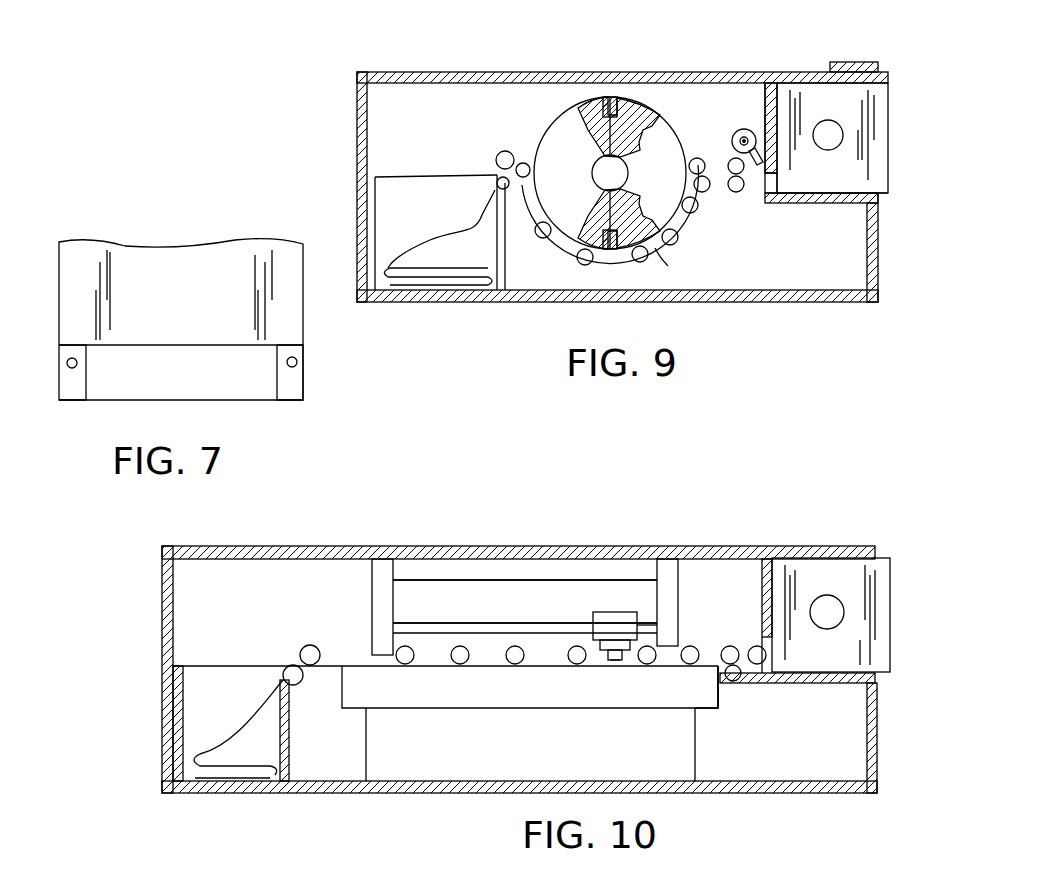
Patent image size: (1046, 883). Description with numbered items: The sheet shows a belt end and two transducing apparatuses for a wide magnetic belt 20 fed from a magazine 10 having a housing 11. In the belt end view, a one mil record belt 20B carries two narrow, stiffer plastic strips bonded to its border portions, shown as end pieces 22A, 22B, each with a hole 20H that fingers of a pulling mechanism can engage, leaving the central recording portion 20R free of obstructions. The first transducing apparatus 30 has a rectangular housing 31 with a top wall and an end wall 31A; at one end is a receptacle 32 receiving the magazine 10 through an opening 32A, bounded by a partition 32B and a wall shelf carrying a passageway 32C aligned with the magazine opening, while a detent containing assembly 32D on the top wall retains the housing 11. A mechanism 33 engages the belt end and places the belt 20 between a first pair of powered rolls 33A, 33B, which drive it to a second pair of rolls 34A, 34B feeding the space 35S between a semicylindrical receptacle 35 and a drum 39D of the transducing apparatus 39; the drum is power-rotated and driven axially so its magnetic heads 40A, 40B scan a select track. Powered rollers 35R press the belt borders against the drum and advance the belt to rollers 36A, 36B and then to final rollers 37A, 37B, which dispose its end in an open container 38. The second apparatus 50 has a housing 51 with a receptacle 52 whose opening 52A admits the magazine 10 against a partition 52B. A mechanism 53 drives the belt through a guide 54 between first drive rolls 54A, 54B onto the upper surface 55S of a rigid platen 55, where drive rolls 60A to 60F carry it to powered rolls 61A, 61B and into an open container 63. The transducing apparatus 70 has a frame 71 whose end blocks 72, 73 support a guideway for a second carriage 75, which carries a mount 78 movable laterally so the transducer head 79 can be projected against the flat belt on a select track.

In FIG. 9, the magazine 10 is at (886, 172).
In FIG. 10, the magazine 10 is at (895, 632).
In FIG. 9, the housing 11 is at (872, 125).
In FIG. 10, the housing 11 is at (878, 612).
In FIG. 7, the magnetic belt 20 is at (181, 319).
In FIG. 9, the magnetic belt 20 is at (443, 240).
In FIG. 10, the magnetic belt 20 is at (250, 745).
In FIG. 7, the record belt 20B is at (166, 243).
In FIG. 7, the central recording portion 20R is at (204, 283).
In FIG. 7, the hole 20H is at (298, 366).
In FIG. 7, the film edge portion 22A is at (72, 385).
In FIG. 7, the film edge portion 22B is at (292, 385).
In FIG. 9, the magnetic transducing apparatus 30 is at (356, 66).
In FIG. 9, the housing 31 is at (445, 72).
In FIG. 9, the housing end wall 31A is at (872, 268).
In FIG. 9, the receptacle 32 is at (828, 196).
In FIG. 9, the opening 32A is at (880, 202).
In FIG. 9, the receptacle partition 32B is at (772, 84).
In FIG. 9, the passageway 32C is at (785, 205).
In FIG. 9, the detent containing assembly 32D is at (852, 62).
In FIG. 9, the mechanism 33 is at (748, 127).
In FIG. 9, the first powered roll 33A is at (740, 160).
In FIG. 9, the first powered roll 33B is at (742, 190).
In FIG. 9, the second powered roll 34A is at (695, 160).
In FIG. 9, the second powered roll 34B is at (708, 192).
In FIG. 9, the semicylindrical receptacle 35 is at (552, 242).
In FIG. 9, the powered rollers 35R is at (690, 198).
In FIG. 9, the space 35S is at (685, 262).
In FIG. 9, the powered roller 36A is at (528, 160).
In FIG. 9, the powered roller 36B is at (477, 232).
In FIG. 9, the powered roller 37A is at (510, 152).
In FIG. 9, the powered roller 37B is at (497, 182).
In FIG. 9, the open container 38 is at (445, 210).
In FIG. 9, the magnetic transducing apparatus 39 is at (660, 105).
In FIG. 9, the drum 39D is at (578, 171).
In FIG. 9, the magnetic head 40A is at (614, 97).
In FIG. 9, the magnetic head 40B is at (597, 252).
In FIG. 10, the apparatus 50 is at (400, 546).
In FIG. 10, the housing 51 is at (525, 546).
In FIG. 10, the receptacle 52 is at (836, 548).
In FIG. 10, the opening 52A is at (878, 685).
In FIG. 10, the receptacle partition 52B is at (766, 572).
In FIG. 10, the mechanism 53 is at (752, 647).
In FIG. 10, the film guide 54 is at (727, 702).
In FIG. 10, the first drive roll 54A is at (718, 646).
In FIG. 10, the first drive roll 54B is at (740, 680).
In FIG. 10, the platen 55 is at (538, 696).
In FIG. 10, the upper surface 55S is at (450, 660).
In FIG. 10, the drive roll 60F is at (405, 664).
In FIG. 10, the drive roll 60A is at (650, 664).
In FIG. 10, the powered roll 61A is at (310, 646).
In FIG. 10, the powered roll 61B is at (300, 688).
In FIG. 10, the open container 63 is at (226, 702).
In FIG. 10, the magnetic transducing apparatus 70 is at (617, 576).
In FIG. 10, the frame 71 is at (374, 632).
In FIG. 10, the end block 72 is at (372, 600).
In FIG. 10, the end block 73 is at (665, 575).
In FIG. 10, the second carriage 75 is at (545, 580).
In FIG. 10, the mount 78 is at (597, 612).
In FIG. 10, the magnetic transducer head 79 is at (615, 662).